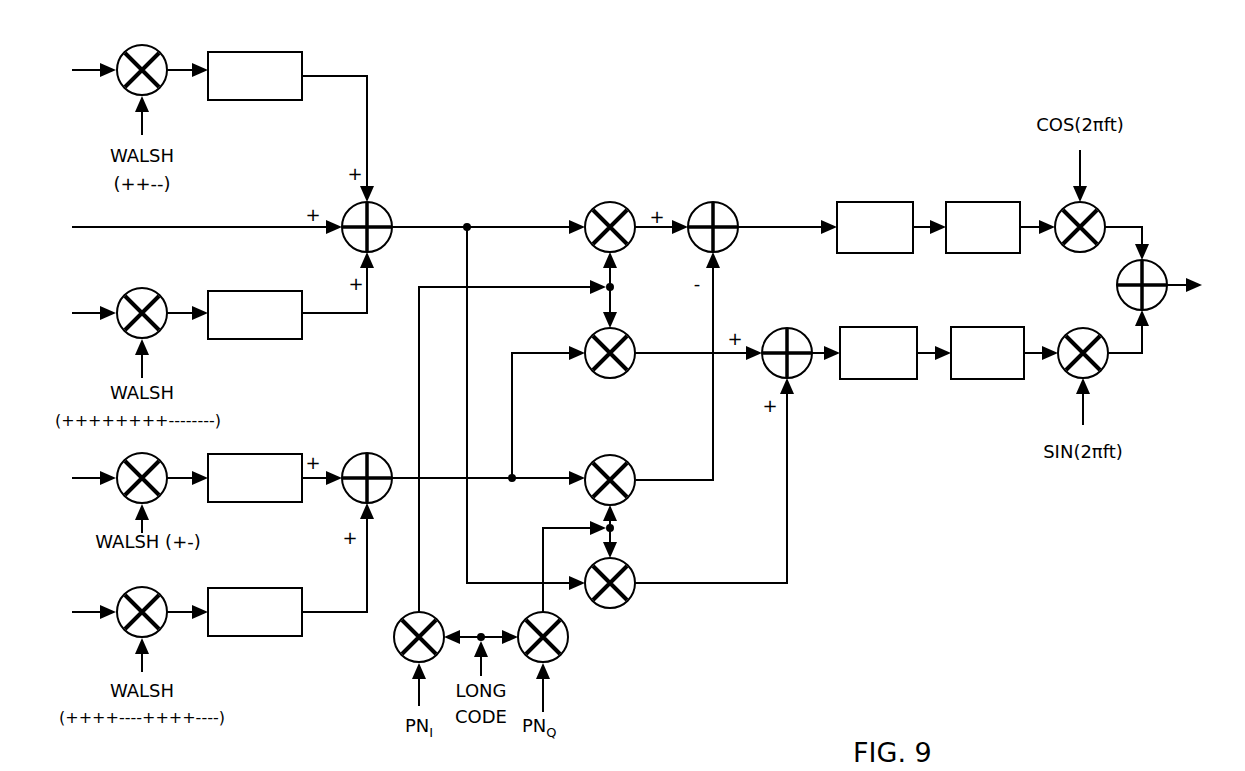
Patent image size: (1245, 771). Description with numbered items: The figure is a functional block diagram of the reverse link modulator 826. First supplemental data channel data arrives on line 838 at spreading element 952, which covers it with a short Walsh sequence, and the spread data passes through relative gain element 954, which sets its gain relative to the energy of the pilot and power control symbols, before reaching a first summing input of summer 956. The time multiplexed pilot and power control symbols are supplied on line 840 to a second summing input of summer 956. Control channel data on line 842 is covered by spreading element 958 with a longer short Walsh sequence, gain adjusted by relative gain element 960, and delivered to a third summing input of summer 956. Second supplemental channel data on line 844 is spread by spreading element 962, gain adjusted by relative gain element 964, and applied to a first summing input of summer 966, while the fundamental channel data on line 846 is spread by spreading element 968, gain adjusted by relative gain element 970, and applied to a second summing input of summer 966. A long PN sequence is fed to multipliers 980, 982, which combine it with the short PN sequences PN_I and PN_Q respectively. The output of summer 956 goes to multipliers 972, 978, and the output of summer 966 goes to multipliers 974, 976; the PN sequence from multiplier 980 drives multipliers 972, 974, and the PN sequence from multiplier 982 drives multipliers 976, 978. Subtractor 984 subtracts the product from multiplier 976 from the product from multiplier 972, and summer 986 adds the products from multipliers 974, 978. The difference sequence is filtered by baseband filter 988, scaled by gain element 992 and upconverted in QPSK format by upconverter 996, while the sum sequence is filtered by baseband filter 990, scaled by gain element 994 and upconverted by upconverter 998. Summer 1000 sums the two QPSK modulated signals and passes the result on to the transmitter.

The modulator 826 is at (838, 60).
The line 838 is at (82, 68).
The line 840 is at (258, 226).
The line 842 is at (82, 311).
The line 844 is at (82, 476).
The line 846 is at (84, 610).
The spreading element 952 is at (143, 45).
The relative gain element 954 is at (265, 52).
The summer 956 is at (348, 208).
The spreading element 958 is at (140, 287).
The relative gain element 960 is at (258, 291).
The spreading element 962 is at (155, 456).
The relative gain element 964 is at (290, 454).
The summer 966 is at (368, 453).
The spreading element 968 is at (162, 626).
The relative gain element 970 is at (280, 589).
The multiplier 972 is at (608, 202).
The multiplier 974 is at (592, 332).
The multiplier 976 is at (602, 455).
The multiplier 978 is at (635, 563).
The multiplier 980 is at (418, 612).
The multiplier 982 is at (567, 640).
The subtractor 984 is at (708, 202).
The summer 986 is at (788, 328).
The baseband filter 988 is at (882, 202).
The baseband filter 990 is at (900, 327).
The gain element 992 is at (993, 202).
The gain element 994 is at (1002, 327).
The upconverter 996 is at (1075, 202).
The upconverter 998 is at (1085, 327).
The summer 1000 is at (1158, 265).